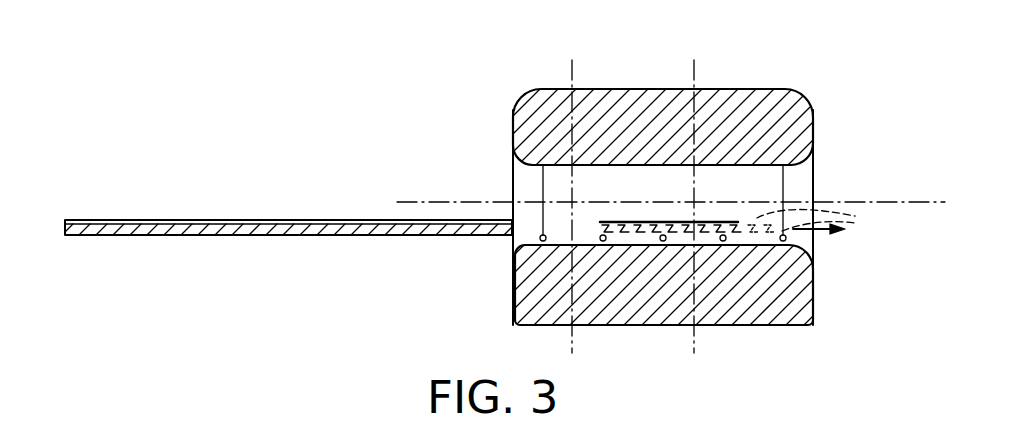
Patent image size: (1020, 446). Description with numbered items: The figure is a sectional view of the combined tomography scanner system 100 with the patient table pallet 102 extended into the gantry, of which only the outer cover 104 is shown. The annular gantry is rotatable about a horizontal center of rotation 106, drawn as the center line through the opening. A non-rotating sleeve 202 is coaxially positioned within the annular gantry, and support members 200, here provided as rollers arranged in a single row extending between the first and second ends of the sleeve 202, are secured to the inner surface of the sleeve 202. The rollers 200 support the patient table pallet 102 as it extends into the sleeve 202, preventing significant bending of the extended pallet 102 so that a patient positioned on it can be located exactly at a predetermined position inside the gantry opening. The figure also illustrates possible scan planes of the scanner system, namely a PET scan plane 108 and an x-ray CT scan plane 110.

The combined tomography scanner system 100 is at (829, 92).
The patient table pallet 102 is at (317, 221).
The outer cover 104 is at (793, 246).
The horizontal center of rotation 106 is at (444, 201).
The PET scan plane 108 is at (572, 62).
The x-ray CT scan plane 110 is at (694, 62).
The support members 200 is at (660, 241).
The non-rotating sleeve 202 is at (770, 179).